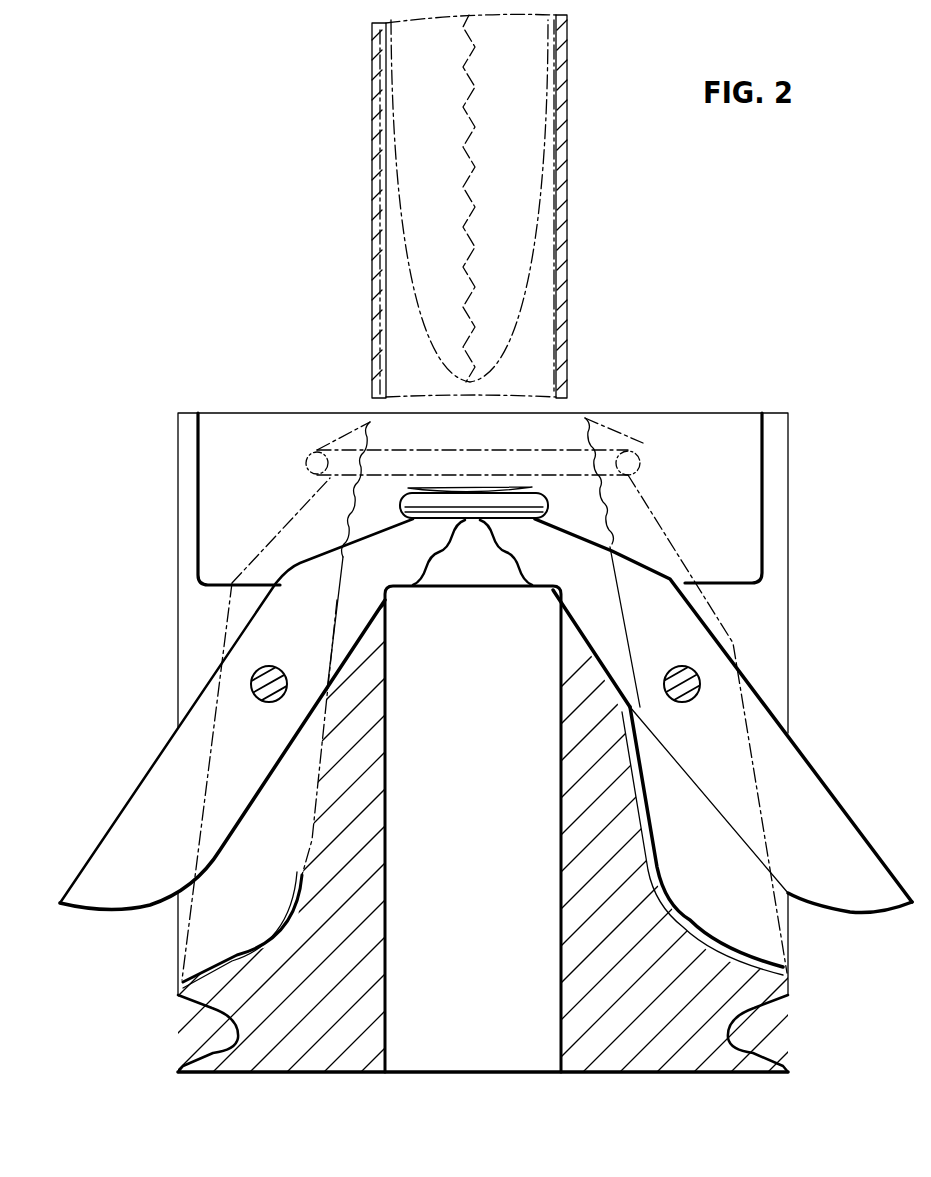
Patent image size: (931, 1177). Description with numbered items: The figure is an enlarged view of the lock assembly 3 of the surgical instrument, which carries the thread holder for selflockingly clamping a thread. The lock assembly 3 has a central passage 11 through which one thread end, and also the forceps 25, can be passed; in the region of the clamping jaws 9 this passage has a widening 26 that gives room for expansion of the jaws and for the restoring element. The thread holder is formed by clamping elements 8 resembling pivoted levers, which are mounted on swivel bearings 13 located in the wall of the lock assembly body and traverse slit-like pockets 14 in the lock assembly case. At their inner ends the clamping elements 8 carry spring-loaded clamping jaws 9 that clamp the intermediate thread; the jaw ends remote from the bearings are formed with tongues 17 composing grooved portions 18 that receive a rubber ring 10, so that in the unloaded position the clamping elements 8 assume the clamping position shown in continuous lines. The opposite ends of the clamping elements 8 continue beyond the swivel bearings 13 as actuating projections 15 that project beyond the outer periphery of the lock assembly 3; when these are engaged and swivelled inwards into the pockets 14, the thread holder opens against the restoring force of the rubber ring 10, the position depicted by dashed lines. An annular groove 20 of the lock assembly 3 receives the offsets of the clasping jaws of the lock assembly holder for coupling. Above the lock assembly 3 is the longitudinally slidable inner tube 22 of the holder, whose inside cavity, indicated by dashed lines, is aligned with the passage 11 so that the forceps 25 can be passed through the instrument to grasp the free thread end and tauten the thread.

The lock assembly 3 is at (258, 330).
The clamping elements 8 is at (215, 663).
The clamping jaws 9 is at (300, 503).
The rubber ring 10 is at (305, 455).
The central passage 11 is at (390, 940).
The swivel bearings 13 is at (267, 703).
The slit-like pockets 14 is at (685, 893).
The actuating projections 15 is at (102, 898).
The tongues 17 is at (350, 413).
The grooved portions 18 is at (645, 465).
The annular groove 20 is at (763, 1043).
The inner tube 22 is at (568, 192).
The forceps 25 is at (410, 115).
The widening 26 is at (240, 413).